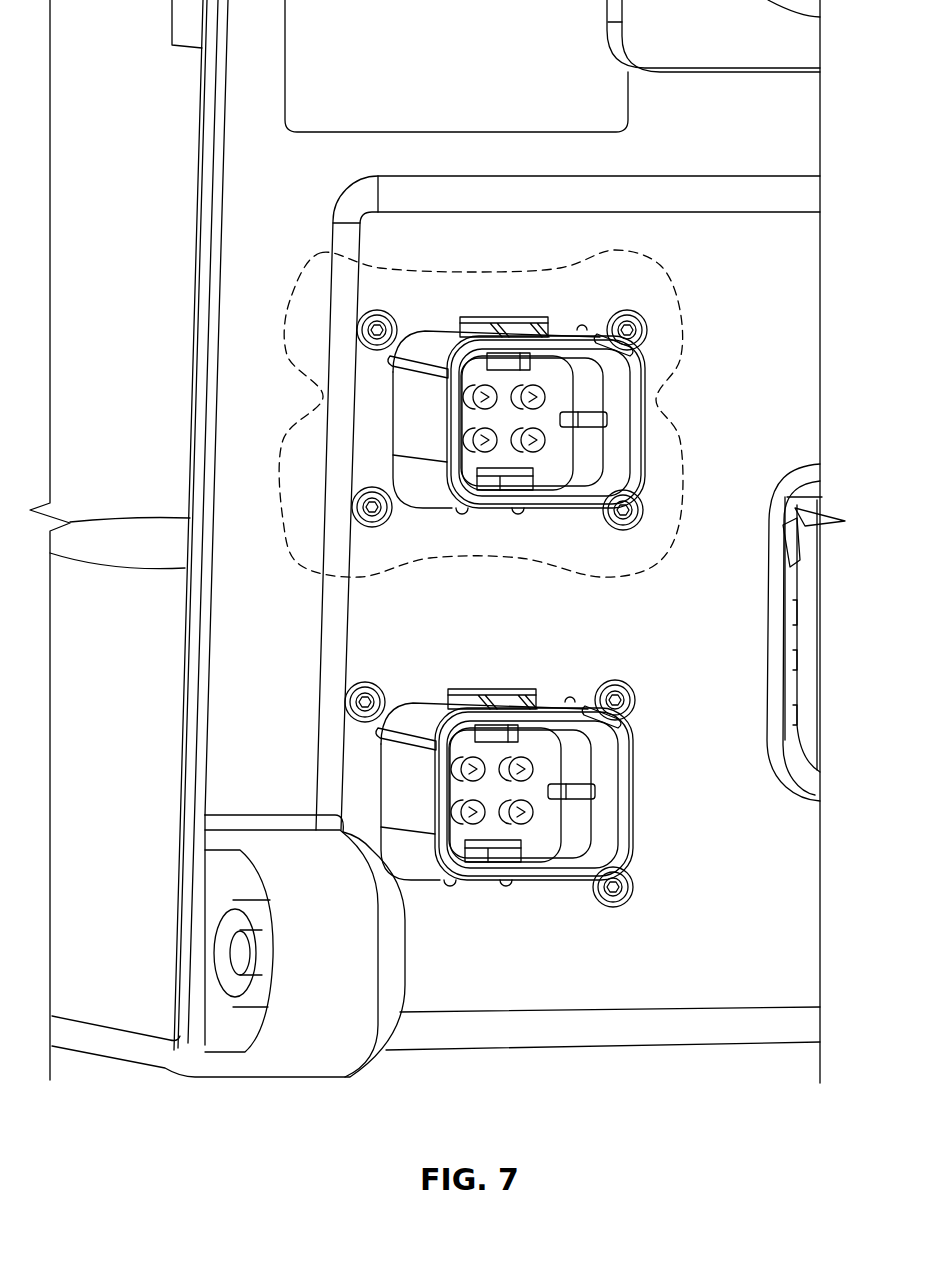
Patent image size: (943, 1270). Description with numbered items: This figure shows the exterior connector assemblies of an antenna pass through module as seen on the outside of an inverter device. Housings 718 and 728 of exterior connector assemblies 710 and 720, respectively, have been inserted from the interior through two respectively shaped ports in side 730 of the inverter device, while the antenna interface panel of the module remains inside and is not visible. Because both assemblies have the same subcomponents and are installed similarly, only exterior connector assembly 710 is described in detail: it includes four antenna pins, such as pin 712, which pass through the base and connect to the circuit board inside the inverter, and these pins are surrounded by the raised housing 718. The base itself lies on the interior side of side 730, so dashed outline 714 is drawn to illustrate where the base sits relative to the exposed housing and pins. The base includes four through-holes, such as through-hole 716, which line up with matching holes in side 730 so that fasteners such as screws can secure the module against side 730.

The exterior connector assembly 710 is at (564, 399).
The antenna pin 712 is at (530, 391).
The dashed outline of the base 714 is at (667, 291).
The through-hole 716 is at (600, 326).
The housing 718 is at (441, 428).
The exterior connector assembly 720 is at (554, 787).
The housing 728 is at (482, 791).
The side 730 is at (521, 639).